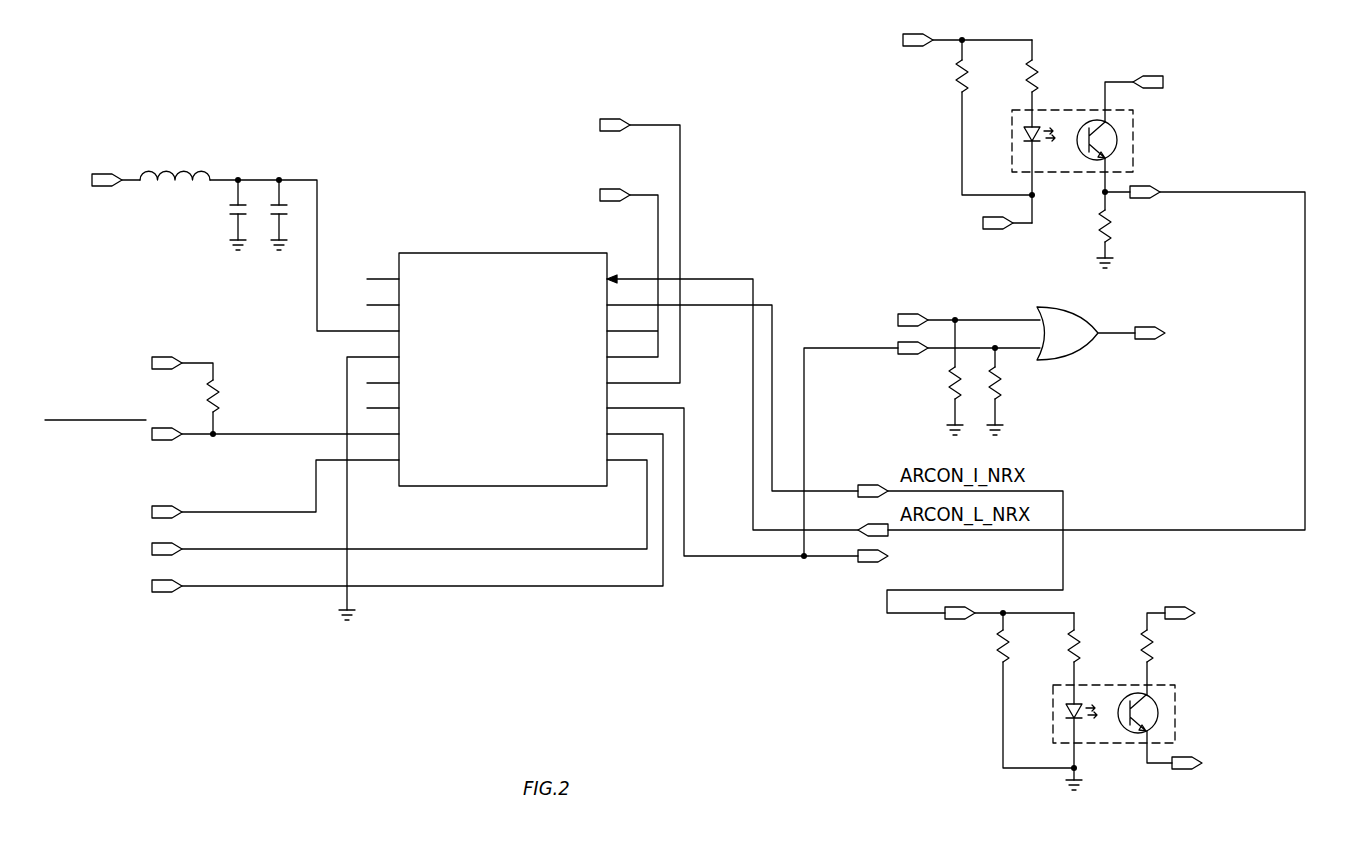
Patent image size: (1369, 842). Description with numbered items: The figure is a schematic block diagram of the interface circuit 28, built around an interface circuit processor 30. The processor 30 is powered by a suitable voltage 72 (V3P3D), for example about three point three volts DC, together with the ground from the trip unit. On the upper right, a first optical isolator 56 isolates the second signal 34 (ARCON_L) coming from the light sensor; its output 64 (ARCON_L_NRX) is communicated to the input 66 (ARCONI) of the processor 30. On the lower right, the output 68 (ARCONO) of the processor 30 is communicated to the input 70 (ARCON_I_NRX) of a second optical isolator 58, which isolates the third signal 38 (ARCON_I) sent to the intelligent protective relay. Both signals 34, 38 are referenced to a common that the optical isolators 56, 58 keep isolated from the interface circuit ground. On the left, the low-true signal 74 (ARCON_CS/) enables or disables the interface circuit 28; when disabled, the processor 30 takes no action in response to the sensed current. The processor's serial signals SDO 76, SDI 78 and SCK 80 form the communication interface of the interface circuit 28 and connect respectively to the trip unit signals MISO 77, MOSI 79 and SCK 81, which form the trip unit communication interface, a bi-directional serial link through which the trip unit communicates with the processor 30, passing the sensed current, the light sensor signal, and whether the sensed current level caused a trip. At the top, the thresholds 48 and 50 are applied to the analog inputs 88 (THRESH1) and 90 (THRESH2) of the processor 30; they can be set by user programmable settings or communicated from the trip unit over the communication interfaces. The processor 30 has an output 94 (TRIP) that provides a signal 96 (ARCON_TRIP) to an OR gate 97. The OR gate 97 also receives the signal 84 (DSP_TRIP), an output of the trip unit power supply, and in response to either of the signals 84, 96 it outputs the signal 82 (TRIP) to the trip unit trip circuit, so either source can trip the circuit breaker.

The interface circuit 28 is at (697, 637).
The processor 30 is at (506, 350).
The second signal 34 is at (923, 61).
The third signal 38 is at (1225, 630).
The threshold 48 is at (566, 253).
The threshold 50 is at (577, 232).
The first optical isolator 56 is at (1097, 159).
The second optical isolator 58 is at (1111, 706).
The output 64 is at (1096, 345).
The input 66 is at (732, 377).
The output 68 is at (732, 398).
The input 70 is at (1001, 633).
The voltage 72 is at (209, 233).
The signal 74 is at (222, 398).
The signal SDO 76 is at (445, 462).
The trip unit signal MISO 77 is at (249, 492).
The signal SDI 78 is at (562, 462).
The trip unit signal MOSI 79 is at (373, 510).
The signal SCK 80 is at (561, 429).
The trip unit signal SCK 81 is at (385, 516).
The signal 82 is at (1172, 351).
The signal 84 is at (921, 355).
The analog input 88 is at (539, 330).
The analog input 90 is at (538, 384).
The output 94 is at (752, 453).
The signal 96 is at (919, 571).
The OR gate 97 is at (1086, 351).